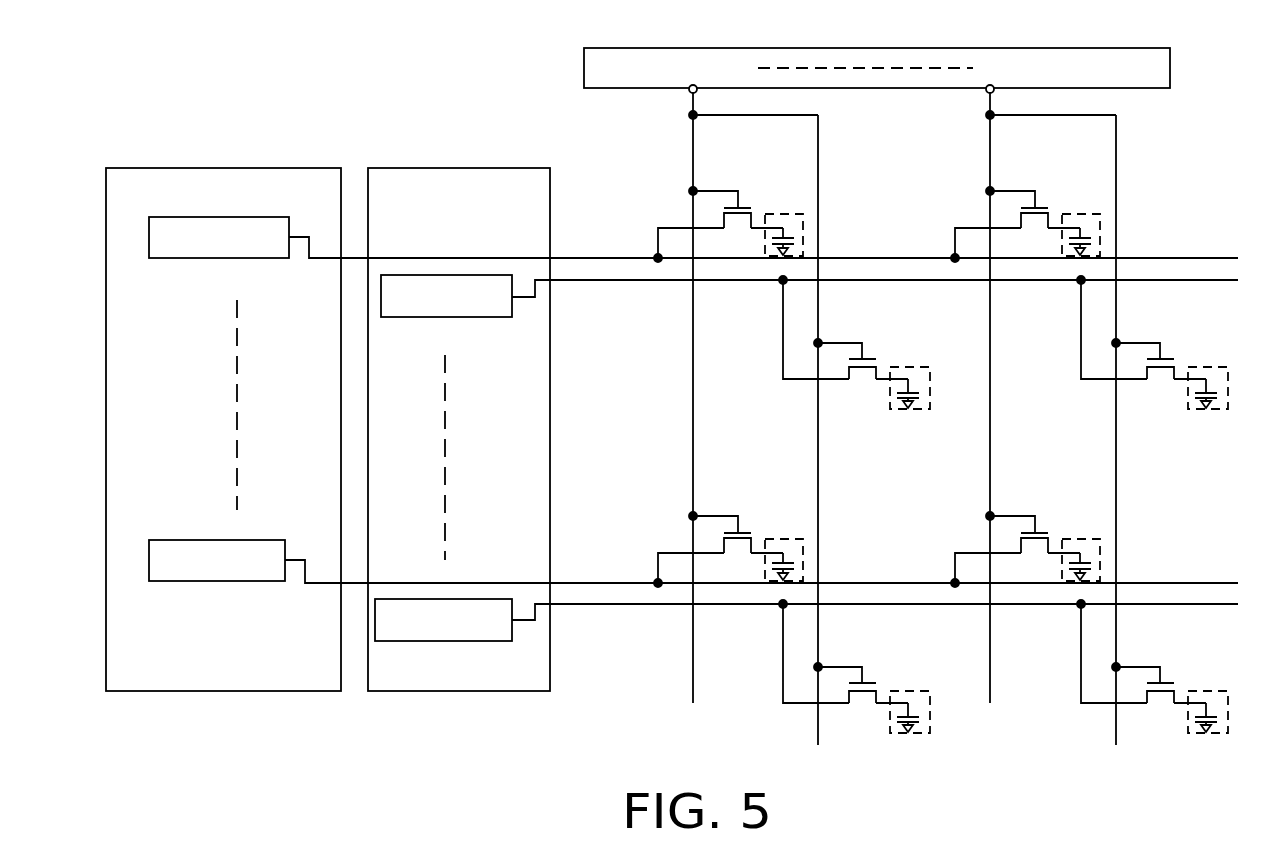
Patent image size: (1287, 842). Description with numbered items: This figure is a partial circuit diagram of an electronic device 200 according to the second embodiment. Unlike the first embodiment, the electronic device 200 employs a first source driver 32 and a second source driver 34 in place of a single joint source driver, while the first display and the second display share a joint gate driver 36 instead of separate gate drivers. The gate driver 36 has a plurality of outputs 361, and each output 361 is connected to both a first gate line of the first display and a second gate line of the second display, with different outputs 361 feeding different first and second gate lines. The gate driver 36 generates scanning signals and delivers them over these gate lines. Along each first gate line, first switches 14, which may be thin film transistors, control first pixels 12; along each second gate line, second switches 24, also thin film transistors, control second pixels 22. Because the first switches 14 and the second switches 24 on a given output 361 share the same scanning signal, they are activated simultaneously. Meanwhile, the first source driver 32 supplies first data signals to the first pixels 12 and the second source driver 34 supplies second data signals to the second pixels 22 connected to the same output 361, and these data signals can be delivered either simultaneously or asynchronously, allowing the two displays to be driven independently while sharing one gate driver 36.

The electronic device 200 is at (507, 74).
The first pixel 12 is at (794, 238).
The first switch 14 is at (867, 388).
The second pixel 22 is at (919, 395).
The second switch 24 is at (992, 509).
The first source driver 32 is at (207, 168).
The second source driver 34 is at (421, 168).
The gate driver 36 is at (853, 48).
The output 361 is at (689, 93).